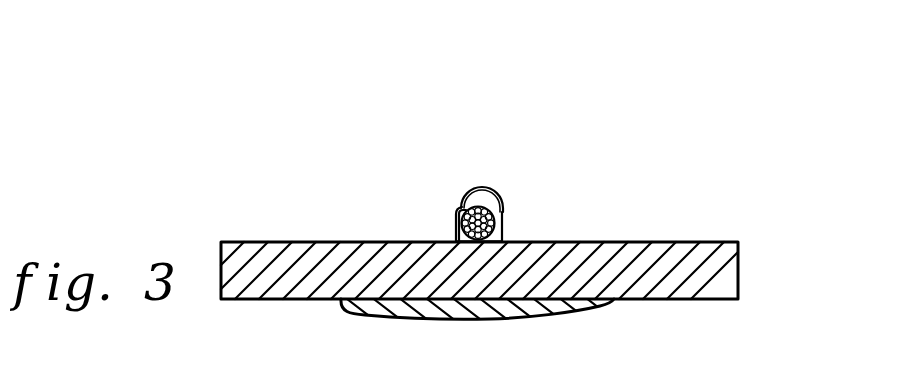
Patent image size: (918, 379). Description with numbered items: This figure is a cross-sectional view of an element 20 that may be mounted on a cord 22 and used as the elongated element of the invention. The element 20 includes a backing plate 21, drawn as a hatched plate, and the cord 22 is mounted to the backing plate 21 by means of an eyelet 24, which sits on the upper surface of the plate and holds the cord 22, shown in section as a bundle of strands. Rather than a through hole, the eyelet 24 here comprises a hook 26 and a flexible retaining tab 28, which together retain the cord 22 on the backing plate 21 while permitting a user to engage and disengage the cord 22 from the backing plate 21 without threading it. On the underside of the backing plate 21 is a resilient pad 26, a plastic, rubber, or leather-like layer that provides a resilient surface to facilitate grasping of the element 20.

The element 20 is at (540, 193).
The backing plate 21 is at (663, 241).
The cord 22 is at (462, 232).
The eyelet 24 is at (455, 129).
The hook 26 is at (346, 307).
The retaining tab 28 is at (457, 227).